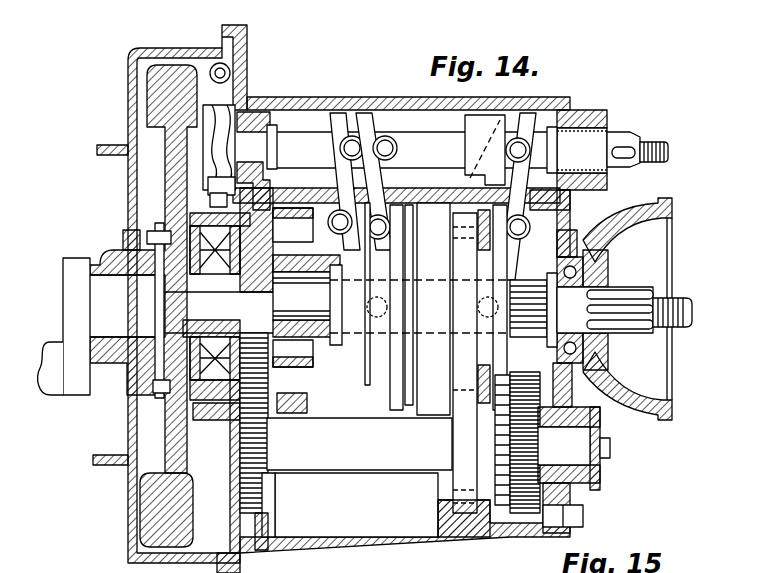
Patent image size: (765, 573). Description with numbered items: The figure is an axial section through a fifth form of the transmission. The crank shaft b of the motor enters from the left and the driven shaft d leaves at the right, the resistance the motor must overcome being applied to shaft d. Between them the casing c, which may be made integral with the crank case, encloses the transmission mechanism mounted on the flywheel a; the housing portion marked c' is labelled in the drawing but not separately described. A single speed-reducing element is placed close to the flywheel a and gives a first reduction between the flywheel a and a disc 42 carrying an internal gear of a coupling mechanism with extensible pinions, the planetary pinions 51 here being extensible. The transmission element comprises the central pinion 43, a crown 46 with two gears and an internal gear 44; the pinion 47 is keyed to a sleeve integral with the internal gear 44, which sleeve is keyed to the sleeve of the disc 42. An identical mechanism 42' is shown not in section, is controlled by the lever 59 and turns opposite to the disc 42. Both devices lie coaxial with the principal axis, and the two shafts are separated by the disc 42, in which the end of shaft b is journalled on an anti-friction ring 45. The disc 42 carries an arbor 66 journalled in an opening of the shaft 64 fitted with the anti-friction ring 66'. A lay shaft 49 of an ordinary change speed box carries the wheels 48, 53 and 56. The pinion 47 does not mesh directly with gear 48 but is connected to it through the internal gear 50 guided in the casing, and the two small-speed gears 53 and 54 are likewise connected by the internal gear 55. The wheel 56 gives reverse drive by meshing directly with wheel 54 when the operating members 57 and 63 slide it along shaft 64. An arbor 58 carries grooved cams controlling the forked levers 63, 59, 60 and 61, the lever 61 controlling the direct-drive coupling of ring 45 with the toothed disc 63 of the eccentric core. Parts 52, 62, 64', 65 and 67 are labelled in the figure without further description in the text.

The flywheel a is at (150, 107).
The crank shaft b is at (70, 292).
The casing c is at (170, 299).
The main housing c' is at (414, 325).
The driven shaft d is at (183, 507).
The disc 42 is at (392, 161).
The identical mechanism 42' is at (402, 309).
The central pinion 43 is at (218, 337).
The internal gear 44 is at (228, 224).
The anti-friction ring 45 is at (166, 392).
The crown 46 is at (128, 390).
The pinion 47 is at (286, 290).
The gear 48 is at (268, 495).
The lay shaft 49 is at (348, 462).
The internal gear 50 is at (258, 548).
The planetary pinions 51 is at (298, 187).
The countershaft 52 is at (288, 405).
The gear for small speed 53 is at (455, 475).
The gear for small speed 54 is at (505, 433).
The internal gear 55 is at (458, 505).
The wheel 56 is at (530, 380).
The operating member 57 is at (510, 285).
The arbor 58 is at (428, 138).
The forked lever 59 is at (380, 177).
The forked lever 60 is at (345, 174).
The forked lever 61 is at (212, 200).
The shaft end 62 is at (622, 140).
The forked lever 63 is at (570, 199).
The shaft 64 is at (619, 309).
The rod 64' is at (132, 300).
The bearing 65 is at (219, 260).
The arbor 66 is at (307, 296).
The anti-friction ring 66' is at (306, 297).
The bearing block 67 is at (312, 232).